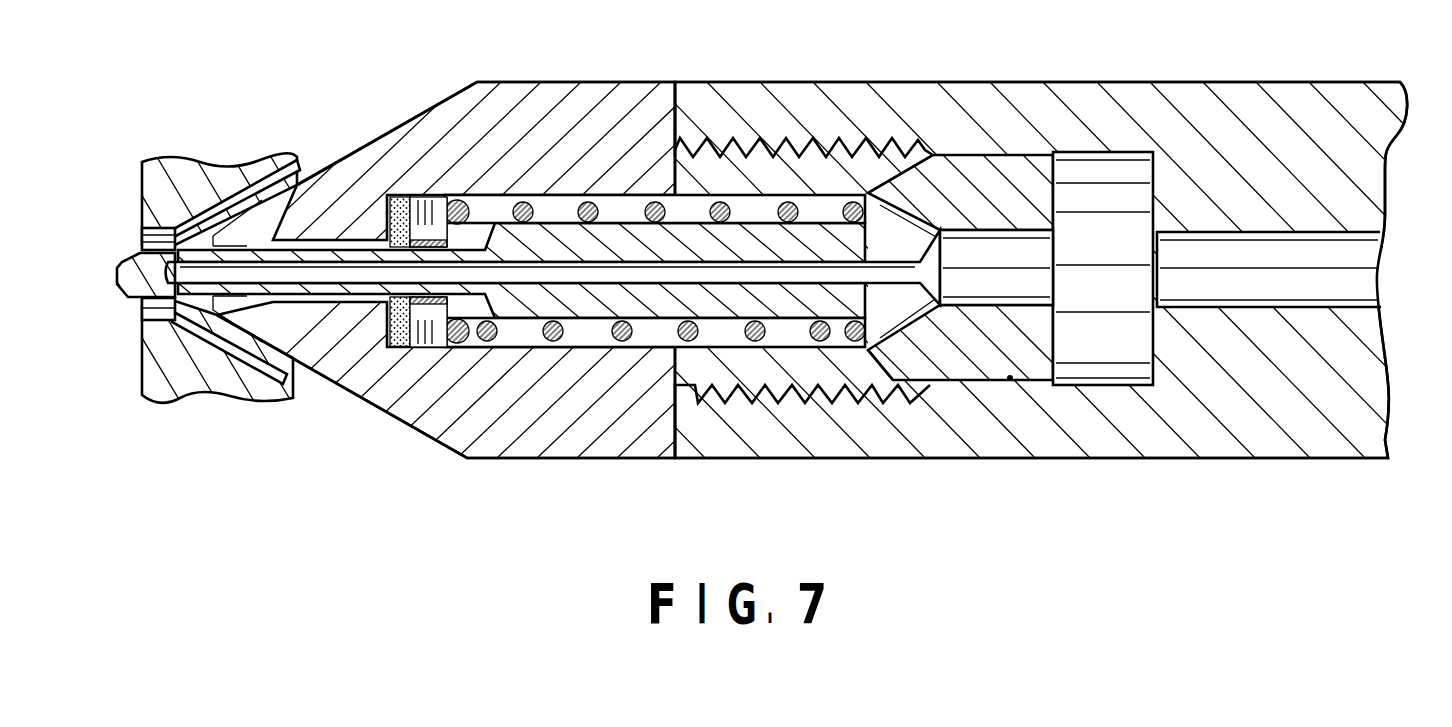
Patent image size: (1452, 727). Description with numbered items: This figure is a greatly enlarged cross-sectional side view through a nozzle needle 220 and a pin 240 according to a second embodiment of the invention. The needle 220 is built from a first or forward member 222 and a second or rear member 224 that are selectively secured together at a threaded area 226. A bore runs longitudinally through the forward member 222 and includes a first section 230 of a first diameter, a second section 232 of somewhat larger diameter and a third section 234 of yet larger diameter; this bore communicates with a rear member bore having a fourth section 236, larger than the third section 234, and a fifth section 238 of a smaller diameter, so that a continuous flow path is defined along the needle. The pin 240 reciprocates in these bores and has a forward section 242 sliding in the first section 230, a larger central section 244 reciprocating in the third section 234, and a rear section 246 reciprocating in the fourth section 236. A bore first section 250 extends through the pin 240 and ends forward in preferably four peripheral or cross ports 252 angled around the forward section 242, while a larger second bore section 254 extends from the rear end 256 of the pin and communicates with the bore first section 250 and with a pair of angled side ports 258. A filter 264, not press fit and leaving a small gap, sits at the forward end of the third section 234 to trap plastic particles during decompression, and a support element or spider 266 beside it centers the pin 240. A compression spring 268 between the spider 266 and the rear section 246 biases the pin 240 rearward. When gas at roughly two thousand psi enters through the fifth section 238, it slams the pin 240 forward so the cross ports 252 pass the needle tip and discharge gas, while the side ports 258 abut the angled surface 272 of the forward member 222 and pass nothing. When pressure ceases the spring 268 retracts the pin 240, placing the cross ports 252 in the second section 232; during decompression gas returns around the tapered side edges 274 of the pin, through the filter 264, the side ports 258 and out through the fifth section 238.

The needle 220 is at (450, 83).
The first or forward member 222 is at (430, 135).
The second or rear member 224 is at (1142, 107).
The threaded area 226 is at (753, 137).
The first section of the forward member bore 230 is at (200, 292).
The second section of the forward member bore 232 is at (305, 307).
The third section of the forward member bore 234 is at (590, 342).
The fourth section of the rear member bore 236 is at (1010, 380).
The fifth section of the rear member bore 238 is at (1350, 303).
The pin 240 is at (625, 212).
The first or forward section of the pin 242 is at (257, 257).
The central section of the pin 244 is at (552, 240).
The third or rear section of the pin 246 is at (1003, 175).
The bore first section of the pin 250 is at (703, 266).
The peripheral or cross ports 252 is at (143, 250).
The second bore section of the pin 254 is at (1053, 255).
The rear end of the pin 256 is at (1058, 322).
The side ports 258 is at (920, 340).
The filter 264 is at (392, 352).
The support element or spider 266 is at (430, 342).
The compression spring 268 is at (747, 340).
The angled surface 272 is at (932, 132).
The angled or tapered side edges 274 is at (128, 296).